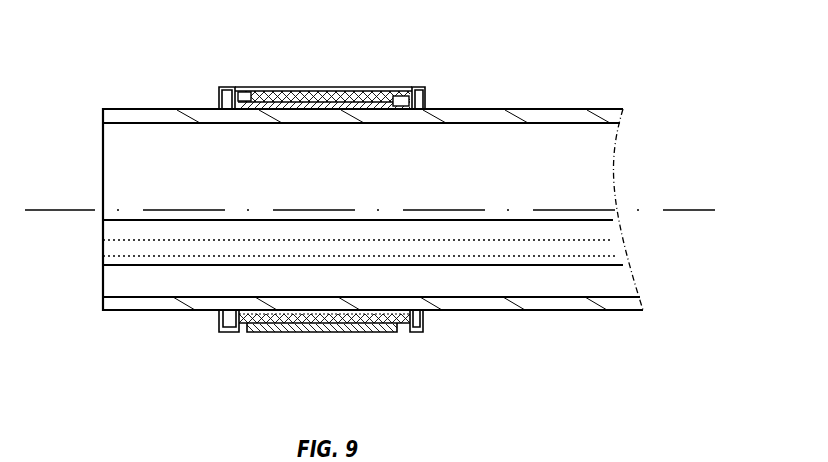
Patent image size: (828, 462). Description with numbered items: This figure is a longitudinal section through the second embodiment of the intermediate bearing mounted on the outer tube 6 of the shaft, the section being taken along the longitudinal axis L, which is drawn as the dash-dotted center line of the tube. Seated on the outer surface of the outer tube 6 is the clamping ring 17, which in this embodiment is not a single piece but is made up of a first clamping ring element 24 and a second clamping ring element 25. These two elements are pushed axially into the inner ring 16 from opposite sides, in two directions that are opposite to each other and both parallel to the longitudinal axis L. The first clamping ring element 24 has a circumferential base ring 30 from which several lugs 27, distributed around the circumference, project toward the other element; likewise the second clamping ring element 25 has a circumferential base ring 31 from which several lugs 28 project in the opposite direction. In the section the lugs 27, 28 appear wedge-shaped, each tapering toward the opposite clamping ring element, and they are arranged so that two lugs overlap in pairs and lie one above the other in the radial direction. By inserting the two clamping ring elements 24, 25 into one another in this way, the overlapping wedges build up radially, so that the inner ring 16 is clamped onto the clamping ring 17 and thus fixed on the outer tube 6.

The outer tube 6 is at (122, 187).
The inner ring 16 is at (343, 87).
The clamping ring 17 is at (320, 110).
The first clamping ring element 24 is at (397, 101).
The second clamping ring element 25 is at (244, 92).
The lugs 27 is at (377, 326).
The lugs 28 is at (270, 333).
The base ring 30 is at (425, 86).
The base ring 31 is at (227, 86).
The longitudinal axis L is at (696, 209).